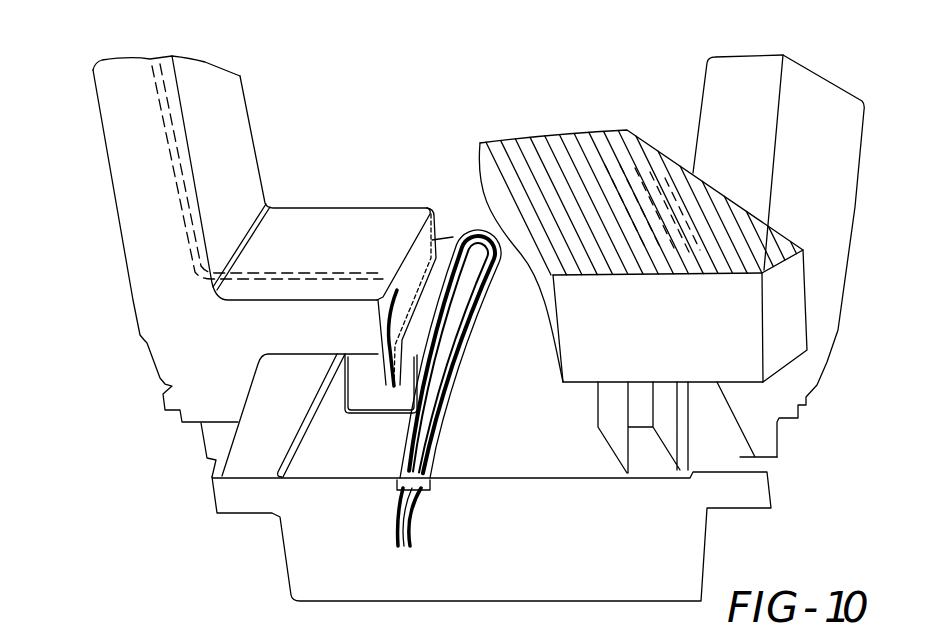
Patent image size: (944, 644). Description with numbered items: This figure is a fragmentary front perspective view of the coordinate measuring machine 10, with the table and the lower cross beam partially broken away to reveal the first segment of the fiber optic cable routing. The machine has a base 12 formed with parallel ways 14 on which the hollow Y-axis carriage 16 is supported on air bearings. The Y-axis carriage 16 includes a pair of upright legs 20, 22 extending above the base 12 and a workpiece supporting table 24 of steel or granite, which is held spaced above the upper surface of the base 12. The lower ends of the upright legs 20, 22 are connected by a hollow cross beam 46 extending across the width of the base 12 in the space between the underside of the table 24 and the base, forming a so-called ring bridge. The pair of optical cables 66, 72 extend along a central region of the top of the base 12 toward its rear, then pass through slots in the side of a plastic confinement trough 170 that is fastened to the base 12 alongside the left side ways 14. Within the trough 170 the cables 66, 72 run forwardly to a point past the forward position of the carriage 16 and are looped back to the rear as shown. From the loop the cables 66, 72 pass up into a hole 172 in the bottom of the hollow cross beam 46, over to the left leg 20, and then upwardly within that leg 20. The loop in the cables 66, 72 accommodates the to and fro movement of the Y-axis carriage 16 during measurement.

The coordinate measuring machine 10 is at (124, 346).
The base 12 is at (250, 575).
The parallel ways 14 is at (232, 463).
The Y-axis carriage 16 is at (97, 265).
The left upright leg 20 is at (123, 170).
The right upright leg 22 is at (882, 222).
The workpiece supporting table 24 is at (633, 140).
The cross beam 46 is at (293, 225).
The optical cable 66 is at (447, 403).
The optical cable 72 is at (452, 354).
The plastic confinement trough 170 is at (342, 422).
The hole 172 is at (390, 262).